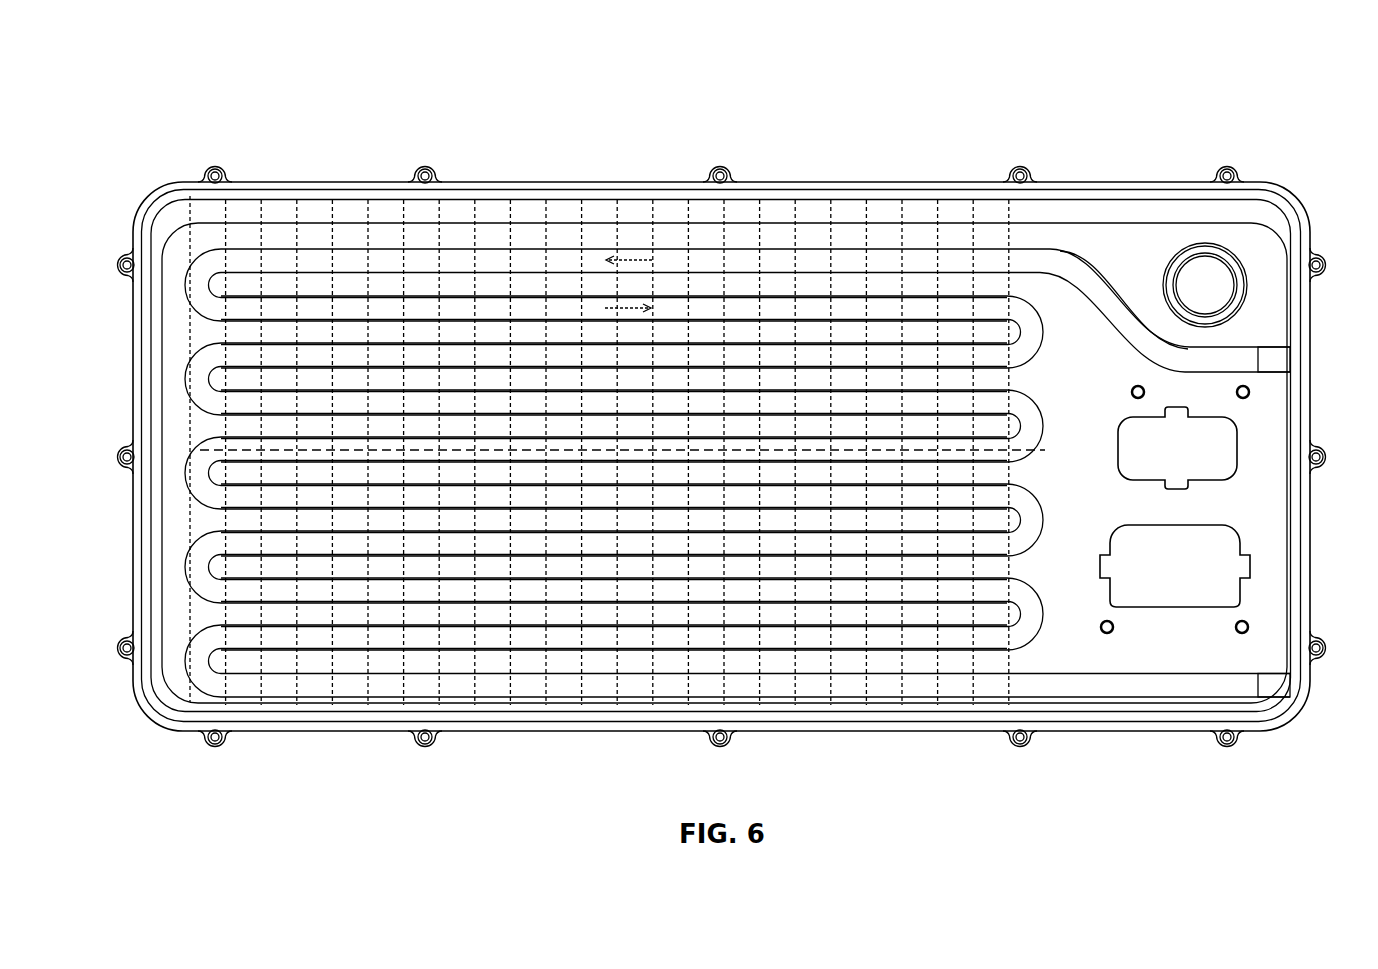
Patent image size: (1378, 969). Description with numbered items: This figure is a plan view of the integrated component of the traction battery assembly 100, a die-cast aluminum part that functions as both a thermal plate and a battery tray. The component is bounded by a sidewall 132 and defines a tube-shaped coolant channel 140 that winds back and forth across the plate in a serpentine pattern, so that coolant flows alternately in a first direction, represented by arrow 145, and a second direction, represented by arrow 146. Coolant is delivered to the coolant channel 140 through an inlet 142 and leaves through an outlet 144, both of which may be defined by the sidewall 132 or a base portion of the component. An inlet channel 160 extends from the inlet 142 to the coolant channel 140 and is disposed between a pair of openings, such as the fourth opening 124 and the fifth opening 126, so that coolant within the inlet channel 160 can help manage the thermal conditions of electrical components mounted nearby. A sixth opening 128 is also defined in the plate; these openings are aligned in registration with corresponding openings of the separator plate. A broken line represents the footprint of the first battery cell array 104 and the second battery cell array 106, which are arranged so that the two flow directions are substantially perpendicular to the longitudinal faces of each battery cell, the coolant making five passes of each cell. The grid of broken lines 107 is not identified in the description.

The traction battery assembly 100 is at (203, 100).
The first battery cell array 104 is at (182, 303).
The second battery cell array 106 is at (185, 564).
The grid lines 107 is at (233, 212).
The fourth opening 124 is at (1220, 243).
The fifth opening 126 is at (1192, 489).
The sixth opening 128 is at (1210, 517).
The sidewall 132 is at (351, 182).
The coolant channel 140 is at (784, 247).
The inlet 142 is at (1312, 352).
The outlet 144 is at (1283, 703).
The arrow 145 is at (627, 257).
The arrow 146 is at (625, 306).
The inlet channel 160 is at (1130, 307).